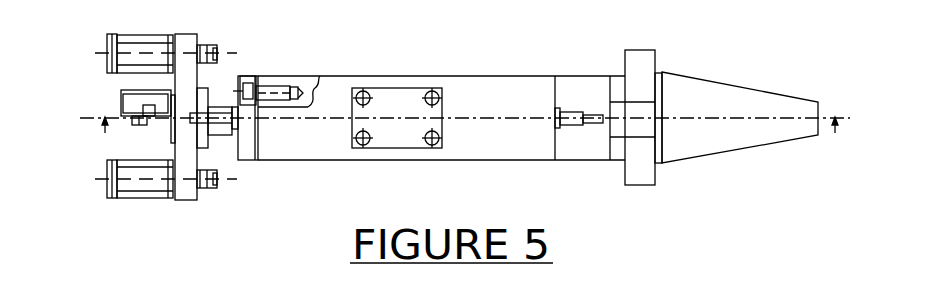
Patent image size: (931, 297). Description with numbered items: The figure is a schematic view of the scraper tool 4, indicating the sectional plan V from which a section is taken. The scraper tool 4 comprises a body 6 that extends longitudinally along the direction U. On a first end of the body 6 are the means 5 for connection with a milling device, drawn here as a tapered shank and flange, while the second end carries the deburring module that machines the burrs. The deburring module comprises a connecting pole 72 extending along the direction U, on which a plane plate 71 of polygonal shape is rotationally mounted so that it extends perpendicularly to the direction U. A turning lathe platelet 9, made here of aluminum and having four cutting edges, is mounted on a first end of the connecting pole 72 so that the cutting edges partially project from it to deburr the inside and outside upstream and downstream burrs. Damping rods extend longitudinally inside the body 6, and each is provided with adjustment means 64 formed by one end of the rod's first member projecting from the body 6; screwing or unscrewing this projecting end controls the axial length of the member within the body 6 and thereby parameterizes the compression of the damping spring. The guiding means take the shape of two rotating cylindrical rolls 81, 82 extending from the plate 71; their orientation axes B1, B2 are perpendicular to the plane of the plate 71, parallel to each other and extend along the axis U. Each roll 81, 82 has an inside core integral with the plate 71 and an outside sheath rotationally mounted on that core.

The scraper tool 4 is at (715, 161).
The means for connection 5 is at (718, 98).
The body 6 is at (502, 142).
The turning lathe platelet 9 is at (148, 105).
The adjustment means 64 is at (577, 115).
The plane plate 71 is at (190, 157).
The connecting pole 72 is at (222, 100).
The rotating cylindrical roll 81 is at (133, 41).
The rotating cylindrical roll 82 is at (125, 192).
The orientation axis B1 is at (150, 55).
The orientation axis B2 is at (150, 180).
The direction U is at (453, 118).
The sectional plan V is at (470, 134).